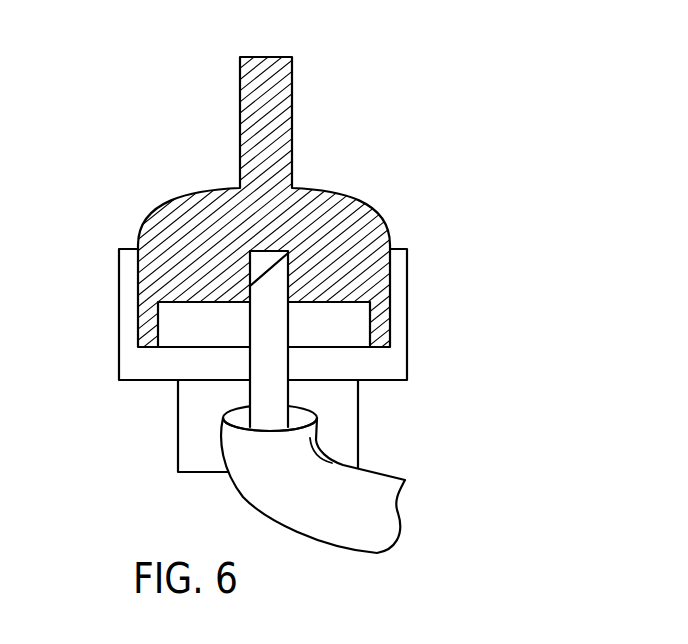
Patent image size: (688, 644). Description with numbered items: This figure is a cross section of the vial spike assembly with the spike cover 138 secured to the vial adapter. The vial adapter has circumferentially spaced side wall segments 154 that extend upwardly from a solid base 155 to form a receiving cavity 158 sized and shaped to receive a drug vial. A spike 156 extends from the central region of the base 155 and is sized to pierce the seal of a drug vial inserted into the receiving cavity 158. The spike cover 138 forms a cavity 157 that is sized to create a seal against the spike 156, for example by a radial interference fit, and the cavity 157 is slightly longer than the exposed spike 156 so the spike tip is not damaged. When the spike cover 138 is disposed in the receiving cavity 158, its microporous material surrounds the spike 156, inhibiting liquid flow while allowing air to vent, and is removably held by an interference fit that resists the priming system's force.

The spike cover 138 is at (148, 212).
The side wall segments 154 is at (403, 268).
The base 155 is at (390, 367).
The spike 156 is at (268, 322).
The cavity 157 is at (275, 251).
The receiving cavity 158 is at (177, 287).